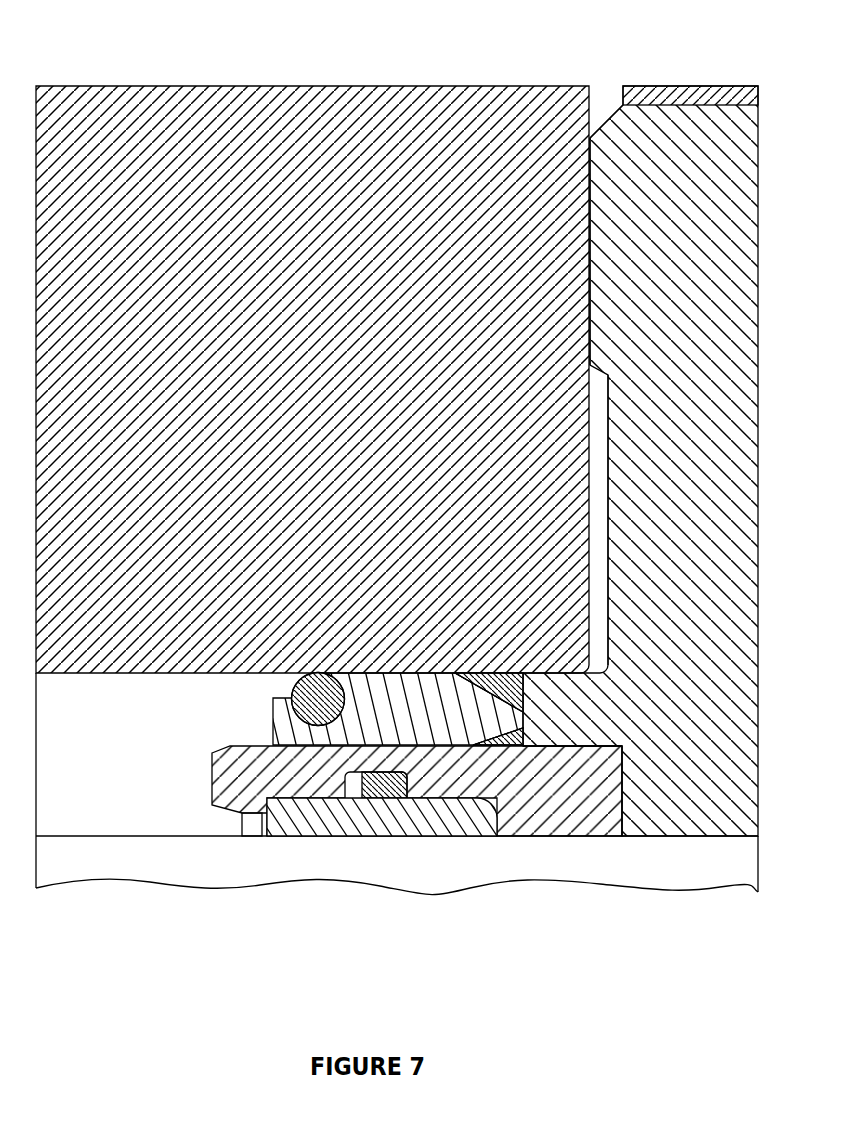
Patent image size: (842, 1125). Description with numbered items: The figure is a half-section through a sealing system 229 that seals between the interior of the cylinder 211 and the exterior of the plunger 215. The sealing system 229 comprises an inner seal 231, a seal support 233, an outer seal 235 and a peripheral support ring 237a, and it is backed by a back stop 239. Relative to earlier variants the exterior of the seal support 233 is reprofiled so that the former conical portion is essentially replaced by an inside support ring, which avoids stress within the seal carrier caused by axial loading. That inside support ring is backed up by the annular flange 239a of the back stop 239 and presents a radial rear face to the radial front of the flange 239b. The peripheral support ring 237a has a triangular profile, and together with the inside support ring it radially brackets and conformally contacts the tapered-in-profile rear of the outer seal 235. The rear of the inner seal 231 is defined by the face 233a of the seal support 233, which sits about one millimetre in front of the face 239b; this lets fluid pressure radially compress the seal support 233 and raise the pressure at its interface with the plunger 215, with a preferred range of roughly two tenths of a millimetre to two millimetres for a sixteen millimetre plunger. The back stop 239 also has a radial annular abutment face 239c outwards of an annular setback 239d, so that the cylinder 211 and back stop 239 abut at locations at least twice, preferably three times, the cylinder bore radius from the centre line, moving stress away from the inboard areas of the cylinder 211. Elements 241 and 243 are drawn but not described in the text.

The cylinder 211 is at (312, 379).
The plunger 215 is at (406, 862).
The sealing system 229 is at (210, 987).
The inner seal 231 is at (378, 822).
The seal support 233 is at (308, 787).
The face 233a is at (522, 748).
The outer seal 235 is at (282, 750).
The peripheral support ring 237a is at (498, 690).
The back stop 239 is at (727, 836).
The annular flange 239a is at (588, 165).
The flange 239b is at (577, 746).
The radial annular abutment face 239c is at (588, 257).
The annular setback 239d is at (590, 495).
The insert 241 is at (376, 786).
The O-ring 243 is at (290, 698).